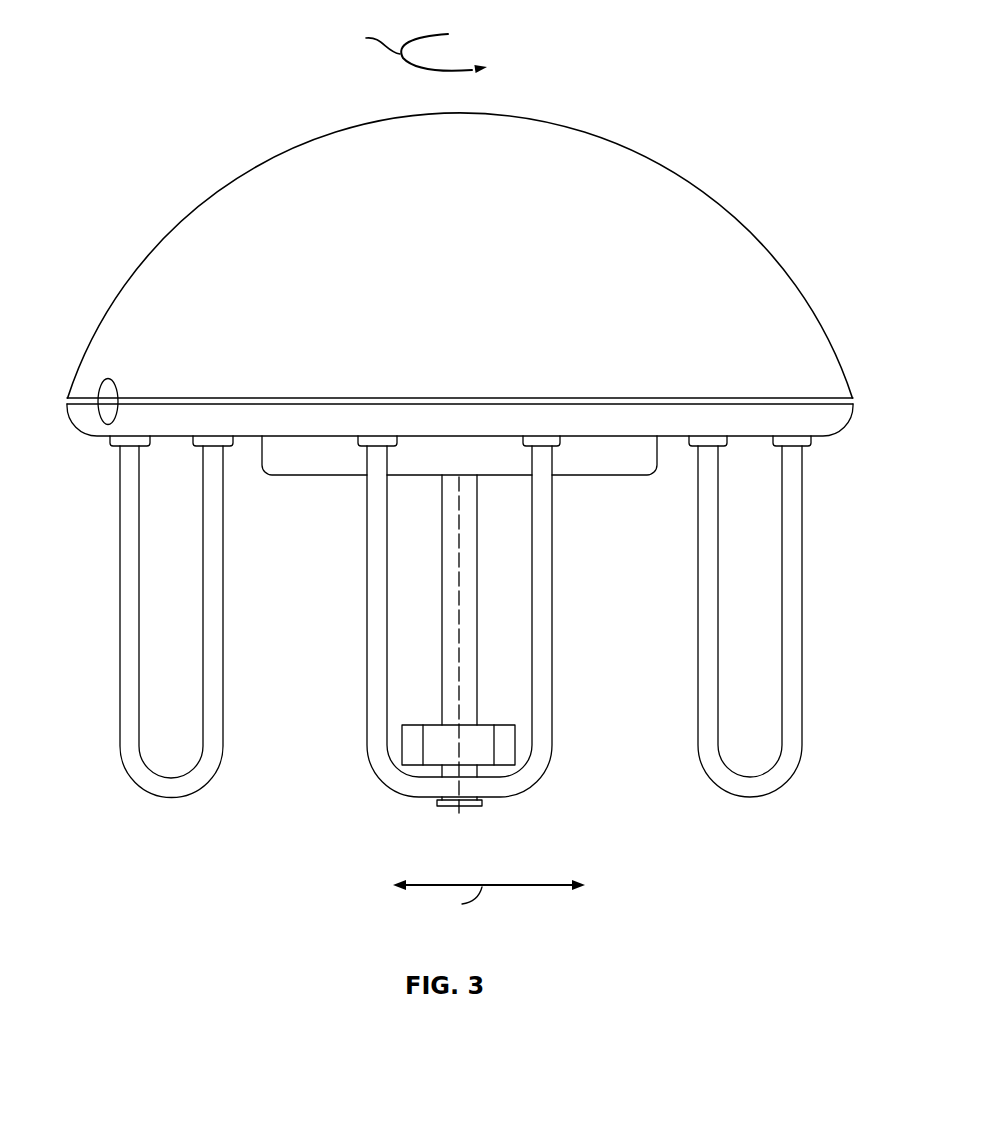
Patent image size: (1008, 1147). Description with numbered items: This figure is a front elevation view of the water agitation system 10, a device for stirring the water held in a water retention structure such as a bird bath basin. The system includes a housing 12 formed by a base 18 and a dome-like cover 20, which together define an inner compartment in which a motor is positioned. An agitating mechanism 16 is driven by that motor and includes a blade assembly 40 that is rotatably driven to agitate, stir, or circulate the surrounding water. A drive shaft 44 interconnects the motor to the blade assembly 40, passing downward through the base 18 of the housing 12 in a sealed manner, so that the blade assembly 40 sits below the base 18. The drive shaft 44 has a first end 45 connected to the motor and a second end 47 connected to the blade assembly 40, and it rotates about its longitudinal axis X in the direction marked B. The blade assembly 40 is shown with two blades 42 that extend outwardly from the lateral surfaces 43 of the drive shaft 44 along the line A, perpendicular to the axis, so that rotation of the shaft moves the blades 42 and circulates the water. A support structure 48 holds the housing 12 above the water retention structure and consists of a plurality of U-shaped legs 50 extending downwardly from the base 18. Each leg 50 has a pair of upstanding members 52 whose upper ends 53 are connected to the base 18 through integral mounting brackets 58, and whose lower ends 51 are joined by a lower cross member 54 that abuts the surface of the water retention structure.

The water agitation system 10 is at (148, 64).
The housing 12 is at (800, 318).
The cover 20 is at (830, 370).
The base 18 is at (830, 417).
The mounting brackets 58 is at (112, 452).
The upper ends 53 is at (803, 446).
The legs 50 is at (473, 641).
The upstanding members 52 is at (118, 633).
The lower ends 51 is at (138, 641).
The lower cross member 54 is at (170, 800).
The support structure 48 is at (816, 612).
The agitating mechanism 16 is at (478, 646).
The lateral surfaces 43 is at (477, 657).
The drive shaft 44 is at (468, 630).
The first end 45 is at (453, 478).
The second end 47 is at (453, 724).
The blade assembly 40 is at (478, 756).
The blades 42 is at (507, 747).